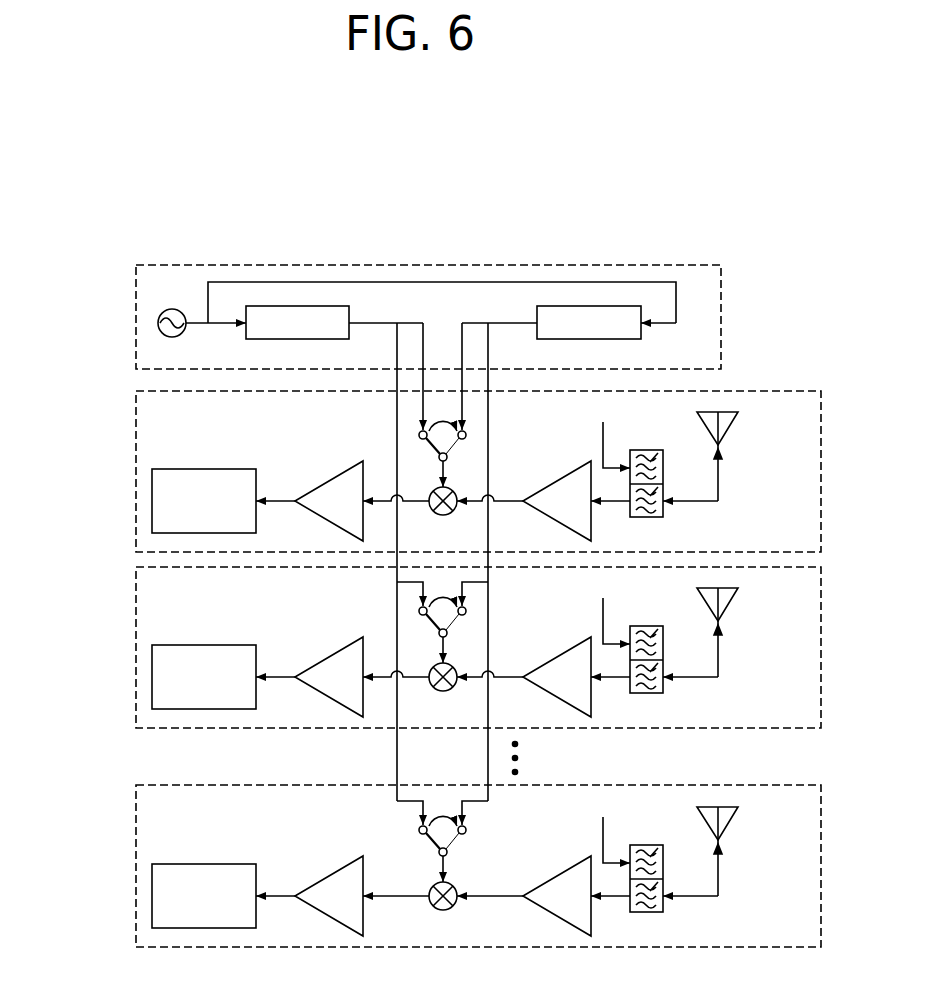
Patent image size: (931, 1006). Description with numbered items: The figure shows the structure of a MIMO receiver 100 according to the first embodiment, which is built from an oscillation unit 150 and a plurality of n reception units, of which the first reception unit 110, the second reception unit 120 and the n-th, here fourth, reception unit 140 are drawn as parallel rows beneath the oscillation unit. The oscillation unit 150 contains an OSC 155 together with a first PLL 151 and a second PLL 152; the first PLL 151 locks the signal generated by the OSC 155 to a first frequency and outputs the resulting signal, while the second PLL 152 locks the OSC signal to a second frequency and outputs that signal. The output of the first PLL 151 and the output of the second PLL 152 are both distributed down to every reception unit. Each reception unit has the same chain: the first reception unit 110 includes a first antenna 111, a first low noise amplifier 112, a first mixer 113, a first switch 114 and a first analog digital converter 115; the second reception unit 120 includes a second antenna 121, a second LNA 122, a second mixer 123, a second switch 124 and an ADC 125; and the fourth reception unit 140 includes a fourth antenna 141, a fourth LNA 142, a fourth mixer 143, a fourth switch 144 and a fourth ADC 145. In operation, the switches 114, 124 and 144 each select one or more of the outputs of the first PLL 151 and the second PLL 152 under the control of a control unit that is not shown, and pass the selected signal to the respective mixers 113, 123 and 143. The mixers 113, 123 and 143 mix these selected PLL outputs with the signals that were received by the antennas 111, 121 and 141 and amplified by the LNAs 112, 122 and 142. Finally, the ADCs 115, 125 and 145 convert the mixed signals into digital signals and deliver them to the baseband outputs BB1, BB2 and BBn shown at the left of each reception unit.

The MIMO receiver 100 is at (741, 252).
The first reception unit 110 is at (136, 462).
The first antenna 111 is at (729, 428).
The first Low Noise Amplifier (LNA) 112 is at (558, 481).
The first mixer 113 is at (433, 512).
The first switch 114 is at (418, 448).
The first Analog Digital Converter (ADC) 115 is at (330, 480).
The second reception unit 120 is at (136, 638).
The second antenna 121 is at (729, 604).
The second LNA 122 is at (558, 657).
The second mixer 123 is at (433, 688).
The second switch 124 is at (418, 624).
The ADC 125 is at (330, 656).
The fourth reception unit 140 is at (136, 858).
The fourth antenna 141 is at (729, 823).
The fourth LNA 142 is at (558, 876).
The fourth mixer 143 is at (433, 907).
The fourth switch 144 is at (418, 843).
The fourth ADC 145 is at (330, 875).
The oscillation unit 150 is at (136, 312).
The first PLL 151 is at (282, 339).
The second PLL 152 is at (572, 339).
The OSC 155 is at (167, 309).